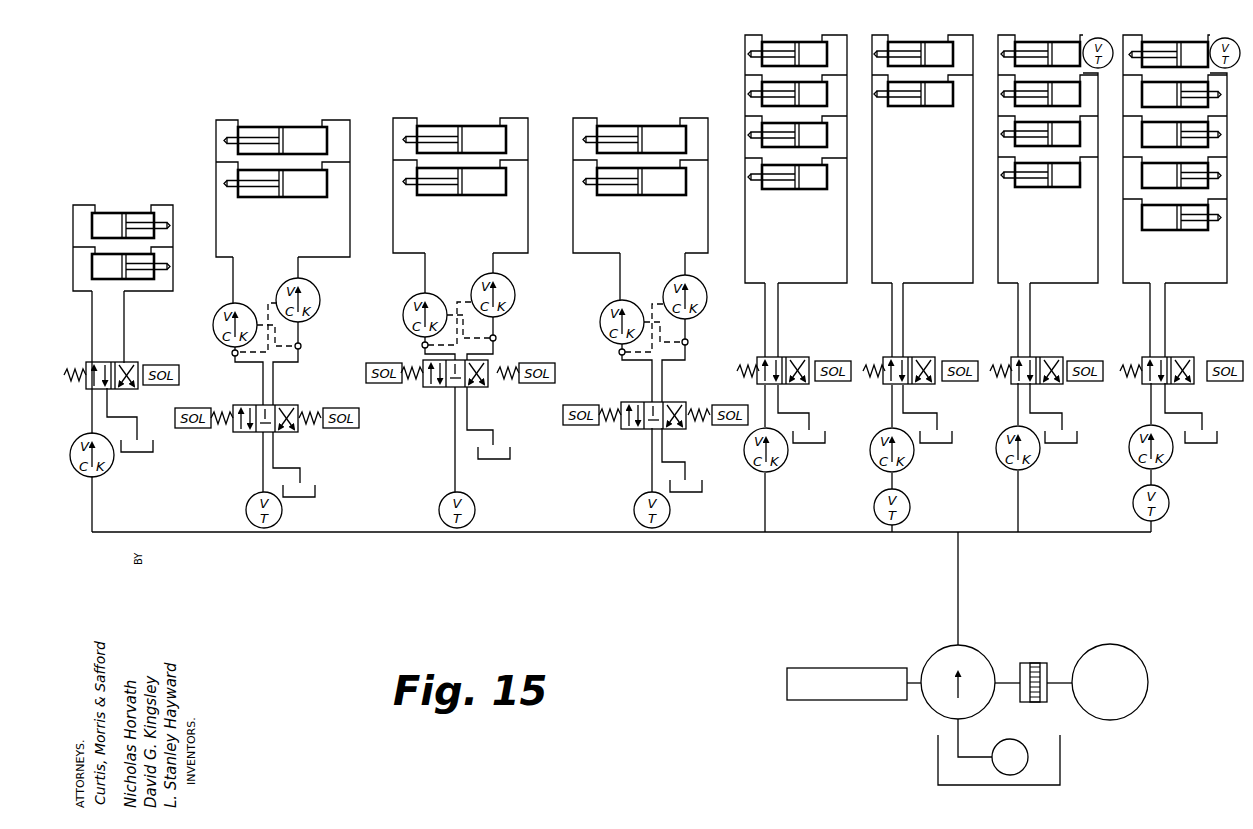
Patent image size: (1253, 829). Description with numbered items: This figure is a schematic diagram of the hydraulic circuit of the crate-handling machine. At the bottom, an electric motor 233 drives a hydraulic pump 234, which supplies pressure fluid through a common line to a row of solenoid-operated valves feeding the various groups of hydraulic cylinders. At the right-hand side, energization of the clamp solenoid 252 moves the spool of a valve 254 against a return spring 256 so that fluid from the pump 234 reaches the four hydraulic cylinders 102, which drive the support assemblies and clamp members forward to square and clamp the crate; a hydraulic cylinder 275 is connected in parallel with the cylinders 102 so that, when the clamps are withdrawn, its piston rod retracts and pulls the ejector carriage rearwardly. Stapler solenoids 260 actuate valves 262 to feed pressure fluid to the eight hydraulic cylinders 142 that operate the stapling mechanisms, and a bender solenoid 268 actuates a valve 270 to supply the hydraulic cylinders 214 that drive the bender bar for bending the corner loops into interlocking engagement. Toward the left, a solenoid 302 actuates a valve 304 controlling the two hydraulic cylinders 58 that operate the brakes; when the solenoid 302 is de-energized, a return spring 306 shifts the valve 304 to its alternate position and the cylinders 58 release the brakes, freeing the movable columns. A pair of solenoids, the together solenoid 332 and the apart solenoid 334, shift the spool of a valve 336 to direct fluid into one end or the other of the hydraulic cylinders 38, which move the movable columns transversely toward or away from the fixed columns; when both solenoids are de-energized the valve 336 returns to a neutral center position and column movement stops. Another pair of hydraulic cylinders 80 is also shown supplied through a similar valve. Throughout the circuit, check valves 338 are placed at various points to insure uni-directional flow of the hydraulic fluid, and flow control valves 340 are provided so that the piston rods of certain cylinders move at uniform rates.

The hydraulic cylinders 58 is at (104, 213).
The hydraulic cylinders 80 is at (262, 131).
The hydraulic cylinders 38 is at (660, 130).
The hydraulic cylinders 142 is at (772, 50).
The hydraulic cylinders 214 is at (905, 50).
The hydraulic cylinders 102 is at (1155, 50).
The hydraulic cylinder 275 is at (1157, 230).
The solenoid 302 is at (153, 365).
The valve 304 is at (120, 366).
The return spring 306 is at (72, 360).
The together solenoid 332 is at (715, 407).
The apart solenoid 334 is at (580, 407).
The valve 336 is at (630, 428).
The check valves 338 is at (110, 464).
The flow control valves 340 is at (283, 512).
The clamp solenoid 252 is at (1240, 381).
The valve 254 is at (1184, 360).
The return spring 256 is at (1125, 380).
The stapler solenoids 260 is at (838, 366).
The valves 262 is at (790, 360).
The bender solenoid 268 is at (965, 366).
The valve 270 is at (912, 360).
The electric motor 233 is at (1142, 668).
The hydraulic pump 234 is at (980, 656).